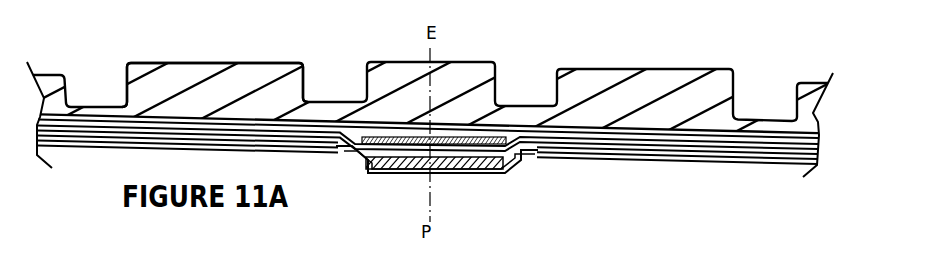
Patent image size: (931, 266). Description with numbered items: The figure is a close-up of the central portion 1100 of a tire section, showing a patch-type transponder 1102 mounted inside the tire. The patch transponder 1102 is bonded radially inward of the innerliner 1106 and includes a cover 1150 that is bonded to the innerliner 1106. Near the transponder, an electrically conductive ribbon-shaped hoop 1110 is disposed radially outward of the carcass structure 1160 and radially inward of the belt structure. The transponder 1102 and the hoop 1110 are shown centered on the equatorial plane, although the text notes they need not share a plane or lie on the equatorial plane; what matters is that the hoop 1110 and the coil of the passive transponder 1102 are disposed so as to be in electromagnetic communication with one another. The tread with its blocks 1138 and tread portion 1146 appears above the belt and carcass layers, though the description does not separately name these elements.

The central portion 1100 is at (520, 46).
The patch-type transponder 1102 is at (506, 204).
The innerliner 1106 is at (573, 146).
The electrically conductive ribbon-shaped hoop 1110 is at (467, 143).
The tread block 1138 is at (252, 82).
The tread 1146 is at (598, 86).
The cover 1150 is at (440, 178).
The carcass structure 1160 is at (642, 152).